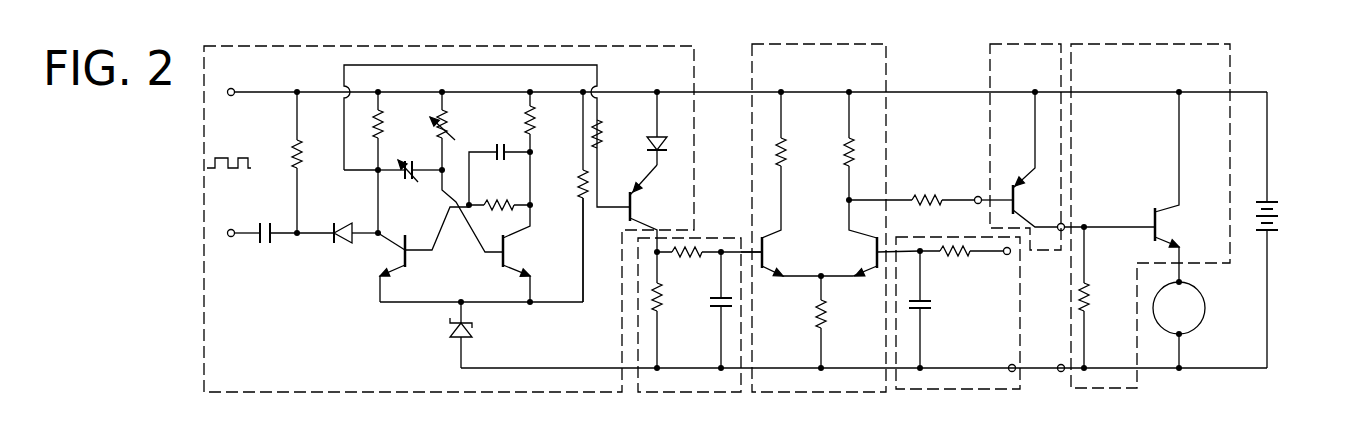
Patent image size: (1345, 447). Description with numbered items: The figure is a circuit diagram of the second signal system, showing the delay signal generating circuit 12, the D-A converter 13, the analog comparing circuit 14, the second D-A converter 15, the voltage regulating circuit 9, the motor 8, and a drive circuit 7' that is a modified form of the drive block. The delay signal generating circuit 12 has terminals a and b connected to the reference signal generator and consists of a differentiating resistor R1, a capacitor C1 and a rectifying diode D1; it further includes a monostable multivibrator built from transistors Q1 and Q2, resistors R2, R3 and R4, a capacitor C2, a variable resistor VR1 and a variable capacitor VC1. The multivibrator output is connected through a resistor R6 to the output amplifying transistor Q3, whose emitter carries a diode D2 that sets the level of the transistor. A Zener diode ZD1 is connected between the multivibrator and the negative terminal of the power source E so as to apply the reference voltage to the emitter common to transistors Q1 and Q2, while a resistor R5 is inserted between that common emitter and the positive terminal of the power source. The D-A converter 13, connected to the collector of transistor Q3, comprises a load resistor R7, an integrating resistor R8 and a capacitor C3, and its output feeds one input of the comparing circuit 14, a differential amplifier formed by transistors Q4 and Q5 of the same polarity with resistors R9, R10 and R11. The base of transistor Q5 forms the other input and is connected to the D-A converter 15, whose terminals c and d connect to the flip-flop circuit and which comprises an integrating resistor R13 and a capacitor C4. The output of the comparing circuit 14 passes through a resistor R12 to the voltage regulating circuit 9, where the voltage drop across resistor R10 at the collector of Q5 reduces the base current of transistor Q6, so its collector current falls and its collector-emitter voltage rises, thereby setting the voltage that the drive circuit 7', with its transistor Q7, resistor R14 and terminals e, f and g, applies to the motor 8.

The delay signal generating circuit 12 is at (694, 48).
The D-A converter 13 is at (684, 393).
The analog comparing circuit 14 is at (886, 62).
The D-A converter 15 is at (950, 390).
The voltage regulating circuit 9 is at (988, 50).
The drive circuit 7' is at (1174, 206).
The motor 8 is at (1203, 305).
The power source E is at (1280, 215).
The differentiating resistor R1 is at (303, 150).
The resistor R2 is at (383, 128).
The resistor R3 is at (535, 122).
The resistor R4 is at (488, 212).
The resistor R5 is at (580, 185).
The resistor R6 is at (602, 130).
The load resistor R7 is at (664, 296).
The integrating resistor R8 is at (690, 258).
The resistor R9 is at (786, 148).
The resistor R10 is at (848, 150).
The resistor R11 is at (825, 318).
The resistor R12 is at (928, 192).
The integrating resistor R13 is at (955, 258).
The resistor R14 is at (1090, 298).
The variable resistor VR1 is at (452, 137).
The variable capacitor VC1 is at (410, 190).
The capacitor C1 is at (266, 222).
The capacitor C2 is at (499, 174).
The capacitor C3 is at (715, 312).
The capacitor C4 is at (933, 305).
The rectifying diode D1 is at (343, 224).
The diode D2 is at (655, 135).
The Zener diode ZD1 is at (474, 330).
The transistor Q1 is at (398, 253).
The transistor Q2 is at (510, 250).
The multivibrator output amplifying transistor Q3 is at (640, 207).
The transistor Q4 is at (772, 254).
The transistor Q5 is at (870, 248).
The transistor Q6 is at (1022, 186).
The transistor Q7 is at (1172, 222).
The terminal a is at (238, 84).
The terminal b is at (238, 264).
The terminal c is at (1014, 277).
The terminal d is at (1017, 359).
The terminal e is at (1060, 220).
The terminal f is at (1066, 357).
The terminal g is at (986, 191).